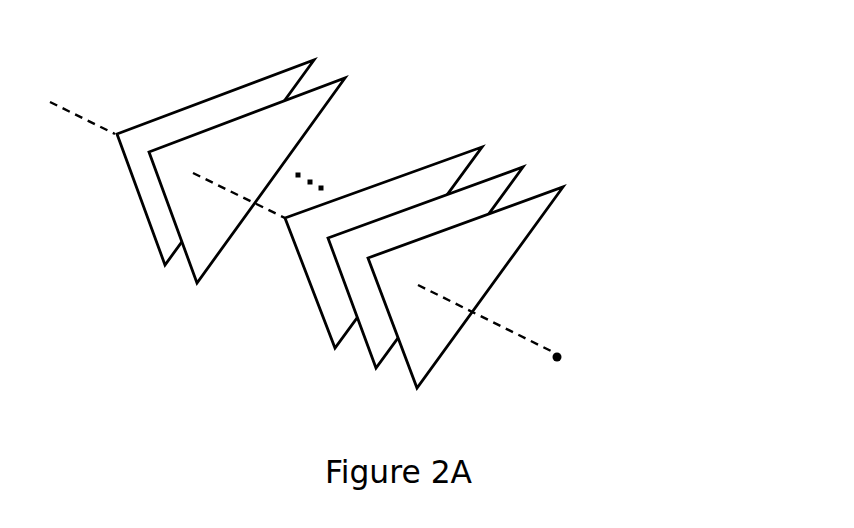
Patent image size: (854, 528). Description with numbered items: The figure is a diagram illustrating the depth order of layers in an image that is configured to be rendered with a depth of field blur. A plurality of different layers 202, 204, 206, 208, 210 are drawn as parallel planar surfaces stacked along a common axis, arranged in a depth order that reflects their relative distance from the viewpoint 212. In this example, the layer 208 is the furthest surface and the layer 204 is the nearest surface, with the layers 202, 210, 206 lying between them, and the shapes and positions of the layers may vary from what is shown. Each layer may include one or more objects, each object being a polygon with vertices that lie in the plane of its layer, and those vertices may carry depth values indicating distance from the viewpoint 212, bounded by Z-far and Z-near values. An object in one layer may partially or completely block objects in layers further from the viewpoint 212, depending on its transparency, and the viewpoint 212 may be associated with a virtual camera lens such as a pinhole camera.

The layer 208 is at (314, 50).
The layer 202 is at (345, 67).
The layer 210 is at (486, 134).
The layer 206 is at (526, 154).
The layer 204 is at (566, 175).
The viewpoint 212 is at (559, 337).